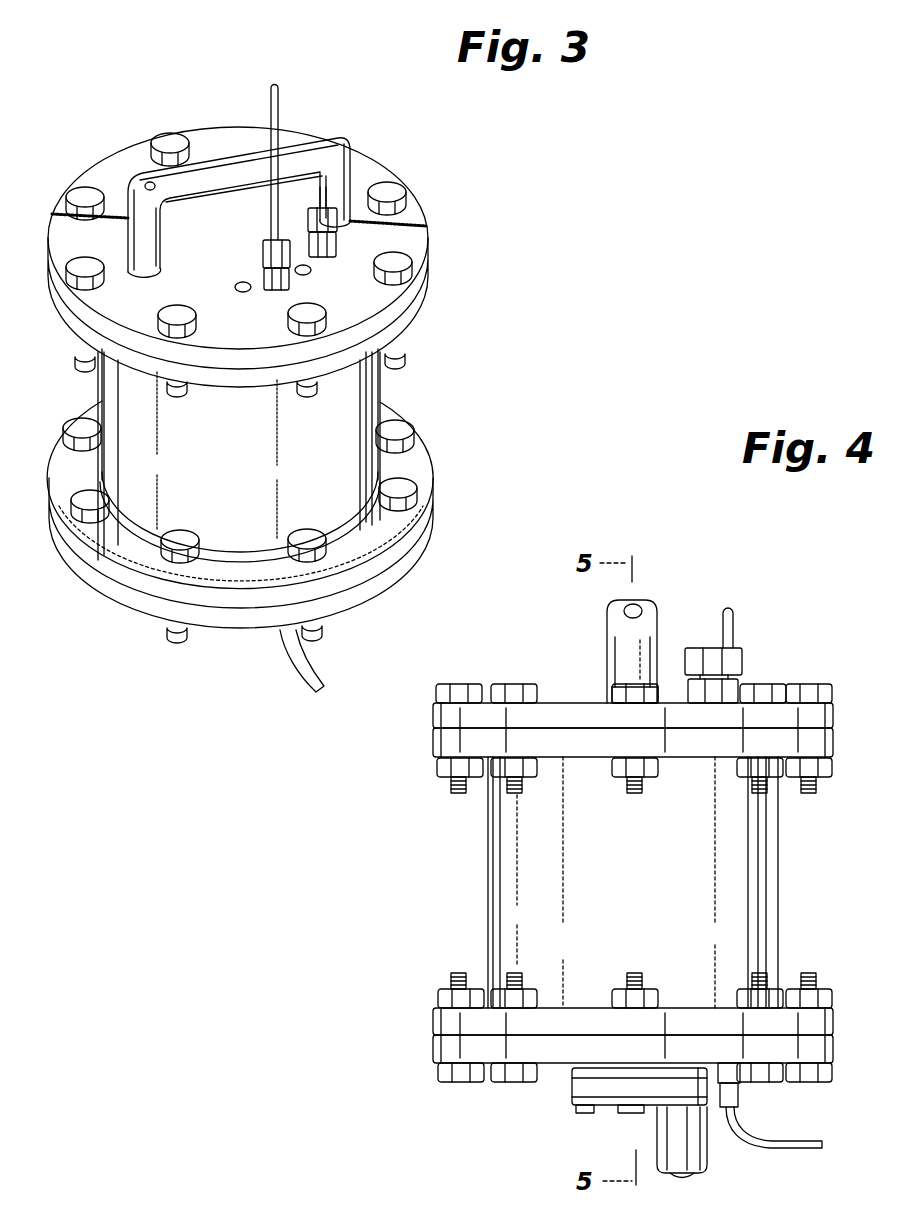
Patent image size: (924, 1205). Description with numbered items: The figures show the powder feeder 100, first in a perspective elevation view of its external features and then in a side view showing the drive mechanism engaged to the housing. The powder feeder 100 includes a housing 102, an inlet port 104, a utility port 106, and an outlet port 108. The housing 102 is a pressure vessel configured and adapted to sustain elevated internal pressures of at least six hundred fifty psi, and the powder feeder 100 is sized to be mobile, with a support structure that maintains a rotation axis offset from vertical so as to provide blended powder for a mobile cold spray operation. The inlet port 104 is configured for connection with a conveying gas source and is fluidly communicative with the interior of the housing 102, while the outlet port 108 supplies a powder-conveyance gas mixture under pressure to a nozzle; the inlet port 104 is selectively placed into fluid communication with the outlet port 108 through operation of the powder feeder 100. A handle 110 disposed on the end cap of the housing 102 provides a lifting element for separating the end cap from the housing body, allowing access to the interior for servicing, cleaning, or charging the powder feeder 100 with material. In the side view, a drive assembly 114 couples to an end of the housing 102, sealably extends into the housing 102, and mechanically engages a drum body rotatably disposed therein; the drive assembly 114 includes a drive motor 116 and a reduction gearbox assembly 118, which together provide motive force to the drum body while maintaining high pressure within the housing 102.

In FIG. 3, the powder feeder 100 is at (462, 222).
In FIG. 4, the powder feeder 100 is at (703, 598).
In FIG. 3, the housing 102 is at (81, 404).
In FIG. 4, the housing 102 is at (483, 902).
In FIG. 3, the inlet port 104 is at (262, 262).
In FIG. 3, the utility port 106 is at (328, 250).
In FIG. 4, the utility port 106 is at (713, 655).
In FIG. 3, the outlet port 108 is at (296, 684).
In FIG. 3, the handle 110 is at (216, 170).
In FIG. 4, the handle 110 is at (632, 651).
In FIG. 4, the drive assembly 114 is at (602, 1123).
In FIG. 4, the drive motor 116 is at (700, 1143).
In FIG. 4, the reduction gearbox assembly 118 is at (572, 1088).